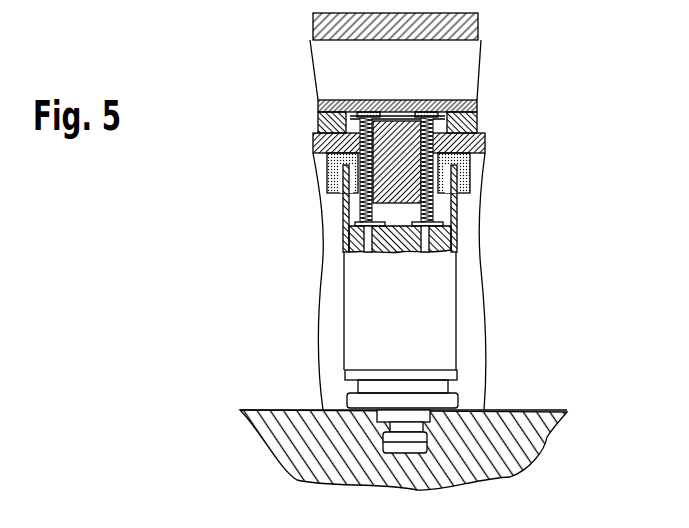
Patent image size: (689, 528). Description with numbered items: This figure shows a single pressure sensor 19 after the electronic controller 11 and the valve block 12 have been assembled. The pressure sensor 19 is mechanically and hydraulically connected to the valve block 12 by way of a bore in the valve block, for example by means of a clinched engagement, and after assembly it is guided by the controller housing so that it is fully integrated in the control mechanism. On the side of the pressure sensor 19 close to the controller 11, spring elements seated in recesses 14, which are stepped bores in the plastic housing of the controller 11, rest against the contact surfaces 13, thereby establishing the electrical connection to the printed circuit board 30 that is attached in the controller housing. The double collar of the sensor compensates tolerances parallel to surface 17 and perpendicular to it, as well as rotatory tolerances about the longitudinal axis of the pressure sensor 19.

The electronic controller 11 is at (450, 63).
The printed circuit board 30 is at (465, 104).
The recesses 14 is at (483, 155).
The contact surfaces 13 is at (450, 210).
The pressure sensor 19 is at (457, 280).
The surface 17 is at (547, 408).
The valve block 12 is at (497, 445).